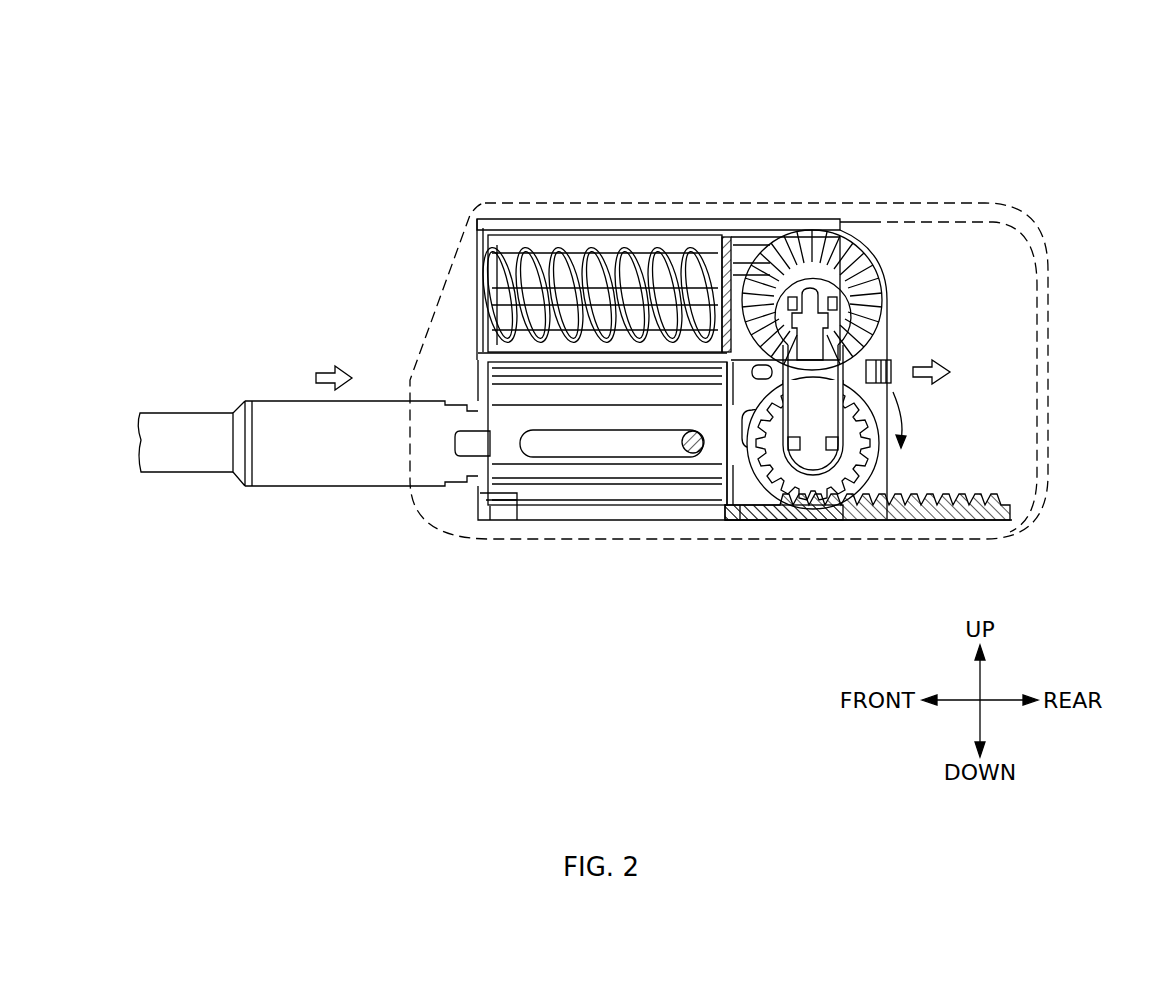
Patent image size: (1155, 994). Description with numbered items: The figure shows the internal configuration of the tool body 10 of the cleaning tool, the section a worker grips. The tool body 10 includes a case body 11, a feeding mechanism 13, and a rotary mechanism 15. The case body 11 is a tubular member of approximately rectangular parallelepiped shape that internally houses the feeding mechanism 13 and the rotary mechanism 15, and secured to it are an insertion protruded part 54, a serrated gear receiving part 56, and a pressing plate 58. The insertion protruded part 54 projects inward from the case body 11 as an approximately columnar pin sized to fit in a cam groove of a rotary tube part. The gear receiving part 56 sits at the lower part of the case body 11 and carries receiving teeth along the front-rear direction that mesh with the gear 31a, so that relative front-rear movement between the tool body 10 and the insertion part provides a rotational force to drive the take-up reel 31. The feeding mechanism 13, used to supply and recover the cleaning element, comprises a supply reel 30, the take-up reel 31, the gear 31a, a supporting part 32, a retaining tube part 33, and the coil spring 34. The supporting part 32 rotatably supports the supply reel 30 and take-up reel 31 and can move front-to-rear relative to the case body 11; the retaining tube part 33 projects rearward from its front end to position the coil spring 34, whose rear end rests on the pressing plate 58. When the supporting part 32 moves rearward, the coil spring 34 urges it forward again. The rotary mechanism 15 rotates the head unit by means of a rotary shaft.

The tool body 10 is at (1000, 122).
The case body 11 is at (603, 201).
The feeding mechanism 13 is at (955, 432).
The rotary mechanism 15 is at (535, 412).
The supply reel 30 is at (872, 278).
The take-up reel 31 is at (872, 460).
The gear 31a is at (785, 498).
The supporting part 32 is at (866, 245).
The retaining tube part 33 is at (530, 268).
The coil spring 34 is at (578, 250).
The insertion protruded part 54 is at (698, 455).
The gear receiving part 56 is at (850, 505).
The pressing plate 58 is at (729, 235).